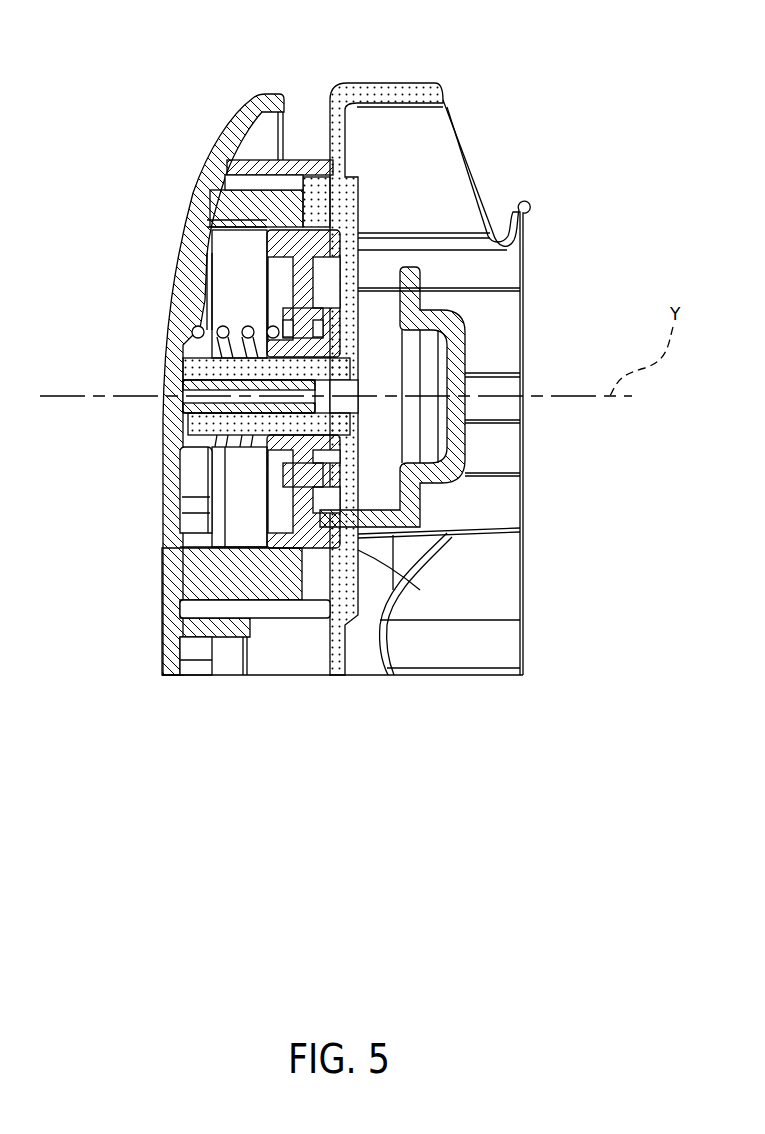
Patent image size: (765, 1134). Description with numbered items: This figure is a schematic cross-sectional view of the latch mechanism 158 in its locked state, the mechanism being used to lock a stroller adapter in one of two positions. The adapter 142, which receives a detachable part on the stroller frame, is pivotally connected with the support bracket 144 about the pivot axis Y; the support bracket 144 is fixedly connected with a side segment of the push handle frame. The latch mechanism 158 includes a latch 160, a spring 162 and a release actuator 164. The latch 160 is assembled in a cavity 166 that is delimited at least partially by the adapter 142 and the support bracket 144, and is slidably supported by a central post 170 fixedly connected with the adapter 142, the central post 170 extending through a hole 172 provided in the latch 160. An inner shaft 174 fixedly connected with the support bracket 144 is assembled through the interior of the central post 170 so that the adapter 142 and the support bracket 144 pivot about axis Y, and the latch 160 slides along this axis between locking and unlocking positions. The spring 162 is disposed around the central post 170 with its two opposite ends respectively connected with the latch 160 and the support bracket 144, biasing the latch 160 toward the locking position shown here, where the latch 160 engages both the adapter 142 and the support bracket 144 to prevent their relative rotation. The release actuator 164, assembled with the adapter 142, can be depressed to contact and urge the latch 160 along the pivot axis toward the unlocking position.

The adapter 142 is at (402, 82).
The support bracket 144 is at (265, 96).
The latch mechanism 158 is at (243, 281).
The latch 160 is at (275, 243).
The spring 162 is at (193, 322).
The release actuator 164 is at (462, 330).
The cavity 166 is at (190, 535).
The central post 170 is at (193, 370).
The hole 172 is at (323, 432).
The inner shaft 174 is at (207, 408).